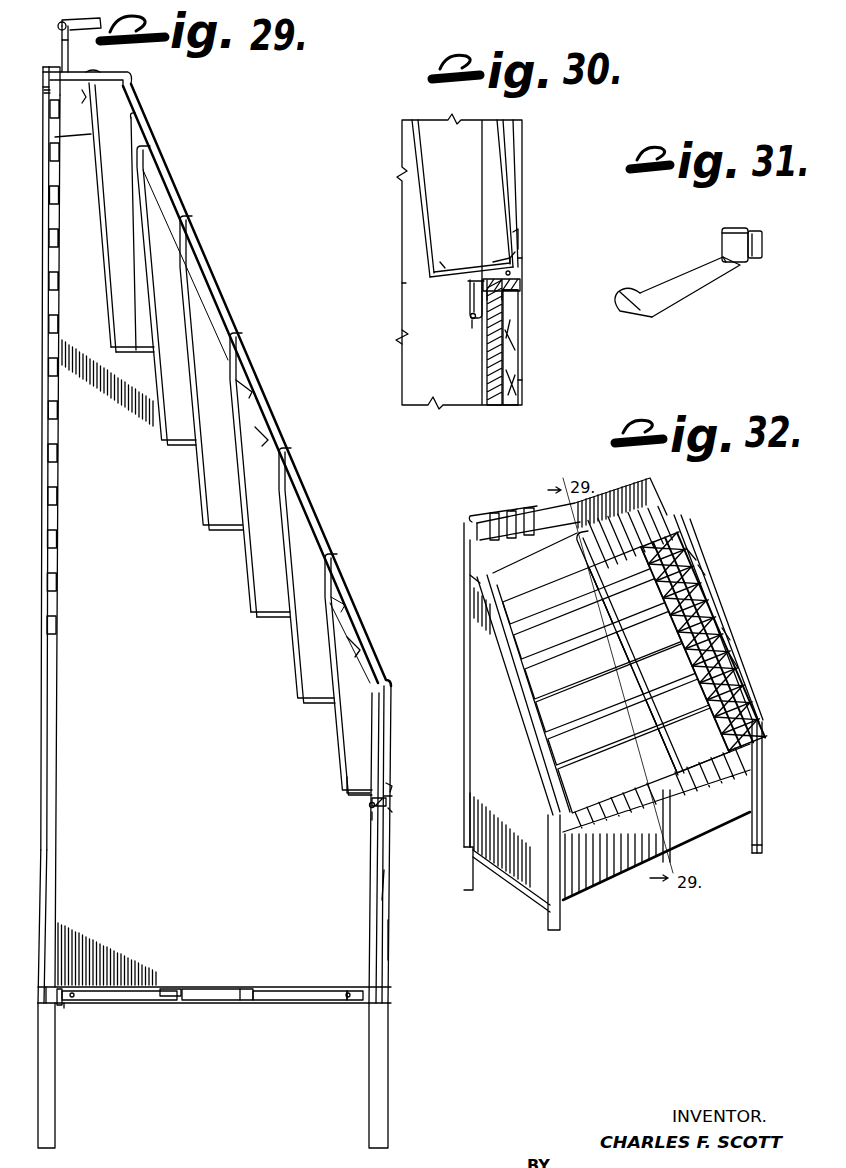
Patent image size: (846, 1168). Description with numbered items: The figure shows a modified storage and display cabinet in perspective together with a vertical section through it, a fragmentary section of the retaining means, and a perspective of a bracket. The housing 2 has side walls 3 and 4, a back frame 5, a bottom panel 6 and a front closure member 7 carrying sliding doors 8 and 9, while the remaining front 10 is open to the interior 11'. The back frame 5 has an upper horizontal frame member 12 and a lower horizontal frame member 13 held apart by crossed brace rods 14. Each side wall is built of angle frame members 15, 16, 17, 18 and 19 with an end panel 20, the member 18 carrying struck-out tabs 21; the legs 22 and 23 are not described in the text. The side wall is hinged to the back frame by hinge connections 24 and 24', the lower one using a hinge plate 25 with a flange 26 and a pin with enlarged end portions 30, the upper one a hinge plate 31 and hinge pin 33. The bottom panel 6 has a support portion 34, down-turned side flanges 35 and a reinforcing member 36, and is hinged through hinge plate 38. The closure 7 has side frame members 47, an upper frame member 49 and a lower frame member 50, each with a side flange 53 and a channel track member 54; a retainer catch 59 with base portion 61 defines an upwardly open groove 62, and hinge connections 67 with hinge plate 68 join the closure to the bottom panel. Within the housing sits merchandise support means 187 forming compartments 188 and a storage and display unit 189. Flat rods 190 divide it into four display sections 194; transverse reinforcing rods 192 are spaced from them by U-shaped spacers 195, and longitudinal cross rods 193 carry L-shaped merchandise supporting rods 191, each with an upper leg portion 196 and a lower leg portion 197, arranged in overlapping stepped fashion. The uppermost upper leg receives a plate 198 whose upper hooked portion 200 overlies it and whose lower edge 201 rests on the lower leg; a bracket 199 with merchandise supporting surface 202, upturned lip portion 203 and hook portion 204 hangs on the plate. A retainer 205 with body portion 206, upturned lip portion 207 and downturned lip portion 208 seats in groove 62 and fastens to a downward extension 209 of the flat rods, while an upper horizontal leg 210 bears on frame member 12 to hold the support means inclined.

In FIG. 29, the housing 2 is at (332, 562).
In FIG. 30, the housing 2 is at (402, 227).
In FIG. 32, the housing 2 is at (728, 633).
In FIG. 29, the side wall 3 is at (262, 438).
In FIG. 30, the side wall 3 is at (402, 337).
In FIG. 32, the side wall 3 is at (687, 557).
In FIG. 32, the side wall 4 is at (464, 760).
In FIG. 29, the back frame 5 is at (43, 352).
In FIG. 29, the bottom panel 6 is at (247, 988).
In FIG. 29, the front closure member 7 is at (390, 938).
In FIG. 30, the front closure member 7 is at (517, 394).
In FIG. 32, the front closure member 7 is at (690, 840).
In FIG. 29, the sliding door 8 is at (388, 884).
In FIG. 30, the sliding door 8 is at (510, 378).
In FIG. 32, the sliding door 8 is at (720, 833).
In FIG. 29, the sliding door 9 is at (378, 907).
In FIG. 30, the sliding door 9 is at (493, 385).
In FIG. 32, the sliding door 9 is at (593, 890).
In FIG. 29, the front 10 is at (392, 712).
In FIG. 30, the front 10 is at (522, 347).
In FIG. 32, the front 10 is at (760, 732).
In FIG. 32, the interior 11' is at (710, 642).
In FIG. 29, the upper horizontal frame member 12 is at (44, 83).
In FIG. 29, the lower horizontal frame member 13 is at (43, 996).
In FIG. 29, the brace rods 14 is at (43, 877).
In FIG. 32, the brace rods 14 is at (660, 523).
In FIG. 29, the frame member 15 is at (392, 757).
In FIG. 30, the frame member 15 is at (522, 320).
In FIG. 32, the frame member 15 is at (762, 778).
In FIG. 29, the frame member 16 is at (312, 524).
In FIG. 32, the frame member 16 is at (735, 660).
In FIG. 29, the frame member 17 is at (126, 81).
In FIG. 32, the frame member 17 is at (476, 565).
In FIG. 29, the frame member 18 is at (53, 655).
In FIG. 32, the frame member 18 is at (464, 840).
In FIG. 32, the frame member 19 is at (520, 887).
In FIG. 29, the end panel 20 is at (42, 557).
In FIG. 30, the end panel 20 is at (402, 287).
In FIG. 32, the end panel 20 is at (677, 510).
In FIG. 29, the tabs 21 is at (60, 515).
In FIG. 29, the rear leg extension 22 is at (55, 1101).
In FIG. 29, the front leg extension 23 is at (388, 1101).
In FIG. 32, the front leg extension 23 is at (762, 842).
In FIG. 29, the hinge connection 24 is at (112, 217).
In FIG. 29, the hinge connection 24' is at (34, 75).
In FIG. 32, the hinge connection 24' is at (458, 588).
In FIG. 29, the hinge plate 25 is at (98, 1003).
In FIG. 29, the flange 26 is at (50, 986).
In FIG. 29, the enlarged end portions 30 is at (85, 1013).
In FIG. 29, the hinge plate 31 is at (96, 73).
In FIG. 29, the hinge pin 33 is at (80, 101).
In FIG. 29, the support portion 34 is at (312, 989).
In FIG. 29, the side flanges 35 is at (160, 1003).
In FIG. 29, the reinforcing member 36 is at (222, 1003).
In FIG. 29, the hinge plate 38 is at (60, 1004).
In FIG. 30, the side frame member 47 is at (483, 363).
In FIG. 29, the upper frame member 49 is at (388, 805).
In FIG. 30, the upper frame member 49 is at (521, 286).
In FIG. 29, the lower frame member 50 is at (388, 1003).
In FIG. 32, the lower frame member 50 is at (762, 810).
In FIG. 29, the side flange 53 is at (393, 810).
In FIG. 30, the track member 54 is at (521, 302).
In FIG. 32, the track member 54 is at (600, 829).
In FIG. 29, the retainer catch 59 is at (370, 804).
In FIG. 30, the retainer catch 59 is at (471, 316).
In FIG. 29, the base portion 61 is at (372, 812).
In FIG. 30, the base portion 61 is at (472, 321).
In FIG. 30, the groove 62 is at (470, 283).
In FIG. 29, the hinge connections 67 is at (350, 1000).
In FIG. 29, the hinge plate 68 is at (366, 987).
In FIG. 32, the merchandise support means 187 is at (722, 602).
In FIG. 29, the compartments 188 is at (262, 582).
In FIG. 32, the compartments 188 is at (556, 766).
In FIG. 29, the storage and display unit 189 is at (62, 45).
In FIG. 29, the flat rods 190 is at (237, 340).
In FIG. 32, the flat rods 190 is at (687, 523).
In FIG. 29, the L-shaped merchandise supporting rods 191 is at (340, 762).
In FIG. 30, the L-shaped merchandise supporting rods 191 is at (426, 213).
In FIG. 32, the L-shaped merchandise supporting rods 191 is at (556, 611).
In FIG. 29, the transverse reinforcing rods 192 is at (250, 390).
In FIG. 32, the transverse reinforcing rods 192 is at (700, 570).
In FIG. 29, the longitudinal cross rods 193 is at (192, 447).
In FIG. 32, the longitudinal cross rods 193 is at (570, 641).
In FIG. 32, the display sections 194 is at (562, 801).
In FIG. 29, the U-shaped spacers 195 is at (172, 190).
In FIG. 32, the U-shaped spacers 195 is at (752, 702).
In FIG. 29, the upper leg portion 196 is at (292, 648).
In FIG. 30, the upper leg portion 196 is at (423, 167).
In FIG. 32, the upper leg portion 196 is at (580, 677).
In FIG. 29, the lower leg portion 197 is at (117, 352).
In FIG. 30, the lower leg portion 197 is at (455, 255).
In FIG. 32, the lower leg portion 197 is at (638, 676).
In FIG. 29, the plate 198 is at (68, 52).
In FIG. 32, the plate 198 is at (488, 530).
In FIG. 29, the bracket 199 is at (78, 21).
In FIG. 31, the bracket 199 is at (678, 305).
In FIG. 32, the bracket 199 is at (494, 514).
In FIG. 29, the upper hooked portion 200 is at (58, 25).
In FIG. 29, the lower edge 201 is at (58, 137).
In FIG. 31, the merchandise supporting surface 202 is at (699, 270).
In FIG. 32, the merchandise supporting surface 202 is at (522, 520).
In FIG. 31, the upturned lip portion 203 is at (640, 312).
In FIG. 31, the hook portion 204 is at (760, 243).
In FIG. 29, the retainer 205 is at (388, 786).
In FIG. 30, the retainer 205 is at (520, 250).
In FIG. 30, the body portion 206 is at (496, 272).
In FIG. 29, the upturned lip portion 207 is at (390, 797).
In FIG. 30, the upturned lip portion 207 is at (520, 268).
In FIG. 29, the downturned lip portion 208 is at (364, 783).
In FIG. 30, the downturned lip portion 208 is at (470, 300).
In FIG. 30, the downward extension 209 is at (521, 202).
In FIG. 29, the upper horizontal leg 210 is at (46, 91).